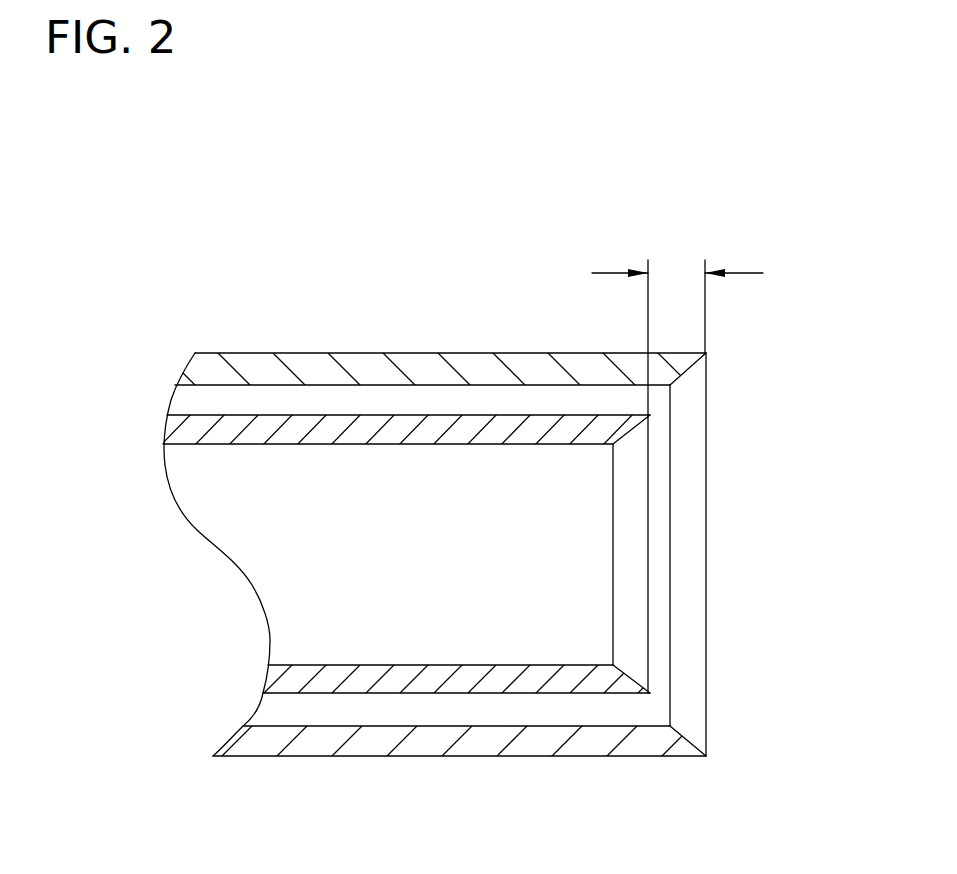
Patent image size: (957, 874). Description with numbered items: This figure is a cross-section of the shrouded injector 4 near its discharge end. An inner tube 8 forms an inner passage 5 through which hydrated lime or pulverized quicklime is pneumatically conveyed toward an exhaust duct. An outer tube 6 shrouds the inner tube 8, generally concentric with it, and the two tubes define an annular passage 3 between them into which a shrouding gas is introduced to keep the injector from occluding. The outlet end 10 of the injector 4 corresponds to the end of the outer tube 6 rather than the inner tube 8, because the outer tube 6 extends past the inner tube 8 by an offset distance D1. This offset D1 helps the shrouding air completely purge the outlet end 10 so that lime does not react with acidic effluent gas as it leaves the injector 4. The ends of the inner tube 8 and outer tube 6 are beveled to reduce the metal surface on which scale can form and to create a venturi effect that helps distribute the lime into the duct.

The annular passage 3 is at (446, 402).
The shrouded injector 4 is at (390, 206).
The inner passage 5 is at (365, 543).
The outer tube 6 is at (520, 354).
The inner tube 8 is at (278, 416).
The outlet end 10 is at (706, 355).
The offset distance D1 is at (698, 337).